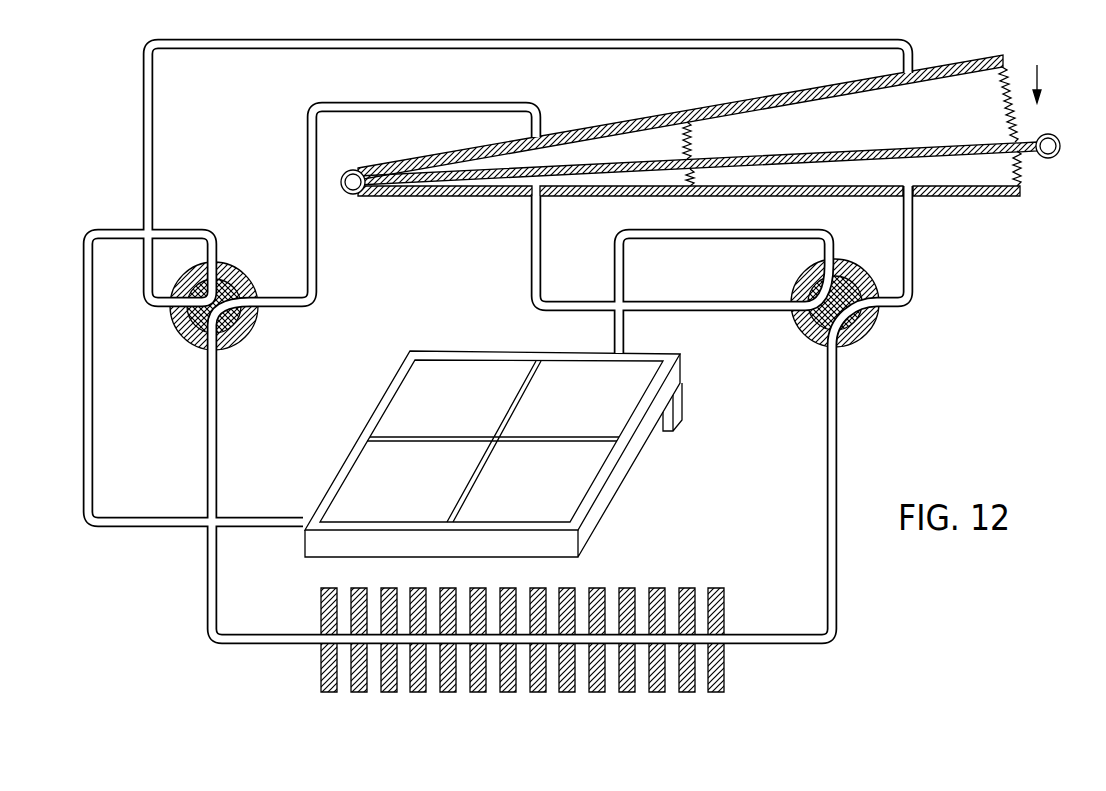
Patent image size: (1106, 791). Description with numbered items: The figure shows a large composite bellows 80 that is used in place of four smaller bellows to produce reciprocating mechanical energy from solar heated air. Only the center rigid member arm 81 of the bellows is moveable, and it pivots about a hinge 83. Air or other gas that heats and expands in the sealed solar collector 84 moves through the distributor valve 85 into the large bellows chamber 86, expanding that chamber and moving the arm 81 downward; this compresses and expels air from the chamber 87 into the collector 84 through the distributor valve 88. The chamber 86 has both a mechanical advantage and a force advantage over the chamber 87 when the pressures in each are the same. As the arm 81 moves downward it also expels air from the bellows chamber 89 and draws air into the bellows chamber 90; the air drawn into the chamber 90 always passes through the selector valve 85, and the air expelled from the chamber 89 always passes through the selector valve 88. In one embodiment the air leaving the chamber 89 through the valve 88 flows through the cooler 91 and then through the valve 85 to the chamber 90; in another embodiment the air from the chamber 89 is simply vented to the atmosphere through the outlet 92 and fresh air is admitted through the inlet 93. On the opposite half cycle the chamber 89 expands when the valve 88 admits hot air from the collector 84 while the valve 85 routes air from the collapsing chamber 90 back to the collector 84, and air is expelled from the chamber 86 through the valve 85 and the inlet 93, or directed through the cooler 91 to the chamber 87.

The composite bellows 80 is at (628, 114).
The center rigid member arm 81 is at (1056, 155).
The hinge 83 is at (358, 193).
The sealed solar collector 84 is at (628, 474).
The distributor valve 85 is at (252, 332).
The large bellows chamber 86 is at (881, 138).
The bellows chamber 87 is at (607, 181).
The distributor valve 88 is at (875, 322).
The bellows chamber 89 is at (881, 183).
The bellows chamber 90 is at (659, 160).
The cooler 91 is at (723, 605).
The vent 92 is at (837, 577).
The inlet 93 is at (217, 457).